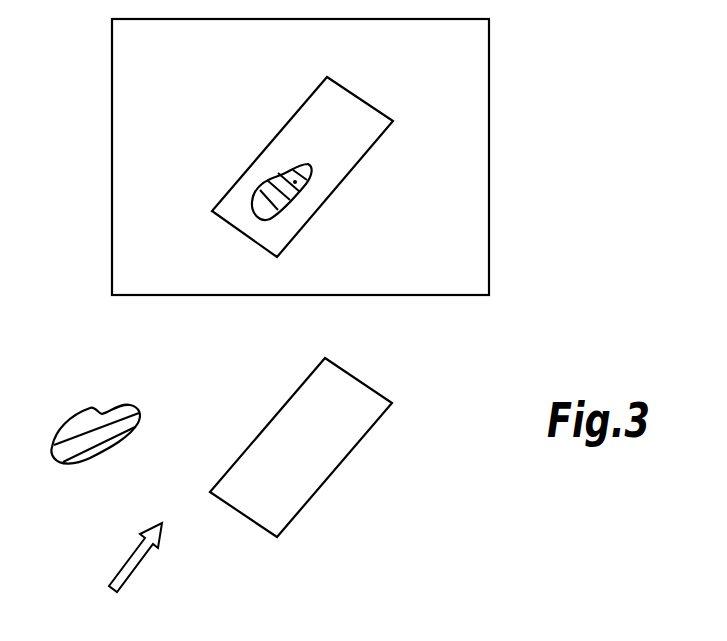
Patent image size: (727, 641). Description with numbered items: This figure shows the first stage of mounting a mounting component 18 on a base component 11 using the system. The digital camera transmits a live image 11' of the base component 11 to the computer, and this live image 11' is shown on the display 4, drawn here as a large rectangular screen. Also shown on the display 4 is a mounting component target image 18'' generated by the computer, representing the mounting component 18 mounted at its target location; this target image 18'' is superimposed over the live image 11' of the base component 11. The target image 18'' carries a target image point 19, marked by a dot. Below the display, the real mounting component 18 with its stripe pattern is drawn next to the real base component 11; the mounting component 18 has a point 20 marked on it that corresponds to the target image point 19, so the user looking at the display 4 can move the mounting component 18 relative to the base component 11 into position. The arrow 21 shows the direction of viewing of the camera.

The display 4 is at (489, 87).
The live image of the base component 11' is at (317, 167).
The mounting component target image 18'' is at (255, 158).
The target image point 19 is at (297, 184).
The mounting component 18 is at (93, 400).
The point 20 is at (108, 435).
The arrow 21 is at (112, 575).
The base component 11 is at (319, 447).